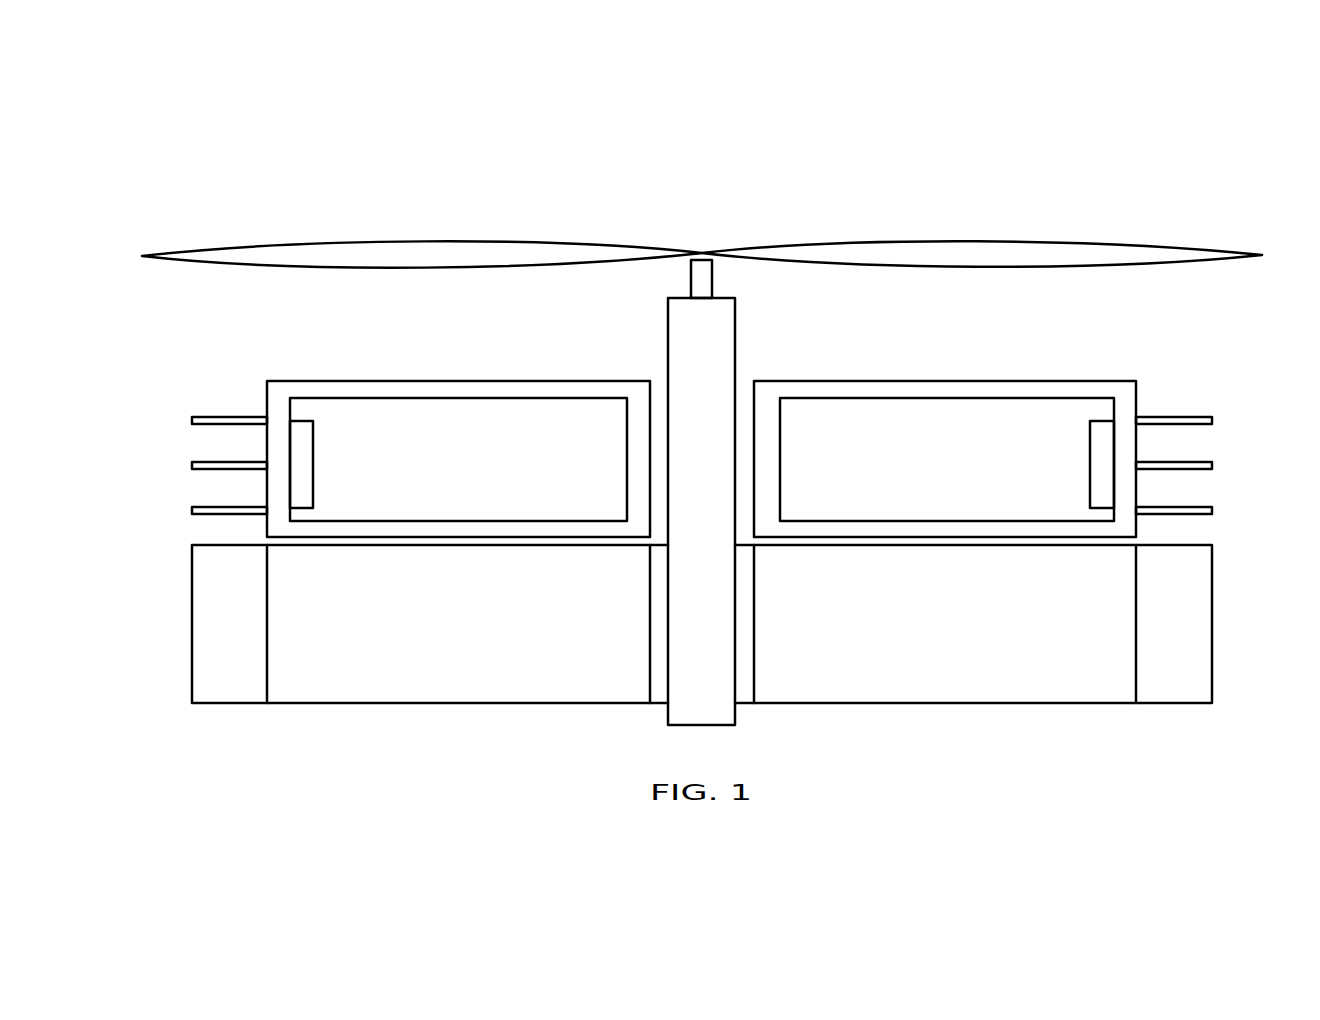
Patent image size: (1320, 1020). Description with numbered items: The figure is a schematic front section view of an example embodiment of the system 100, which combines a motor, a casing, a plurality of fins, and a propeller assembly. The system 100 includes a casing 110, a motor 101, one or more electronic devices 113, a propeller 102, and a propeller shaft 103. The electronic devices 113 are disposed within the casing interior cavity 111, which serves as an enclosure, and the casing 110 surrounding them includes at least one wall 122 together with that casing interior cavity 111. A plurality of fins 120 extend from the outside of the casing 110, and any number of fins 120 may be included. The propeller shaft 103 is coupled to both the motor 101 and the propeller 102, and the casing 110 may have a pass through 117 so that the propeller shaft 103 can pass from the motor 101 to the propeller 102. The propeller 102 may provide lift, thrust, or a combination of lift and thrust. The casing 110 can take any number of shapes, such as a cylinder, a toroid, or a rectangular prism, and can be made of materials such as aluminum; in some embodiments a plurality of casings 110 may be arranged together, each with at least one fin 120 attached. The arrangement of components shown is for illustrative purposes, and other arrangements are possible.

The system 100 is at (701, 411).
The motor 101 is at (347, 703).
The propeller 102 is at (315, 247).
The propeller shaft 103 is at (712, 342).
The casing 110 is at (305, 385).
The casing interior cavity 111 is at (702, 422).
The electronic devices 113 is at (313, 459).
The pass through 117 is at (657, 385).
The fins 120 is at (192, 420).
The wall 122 is at (265, 528).